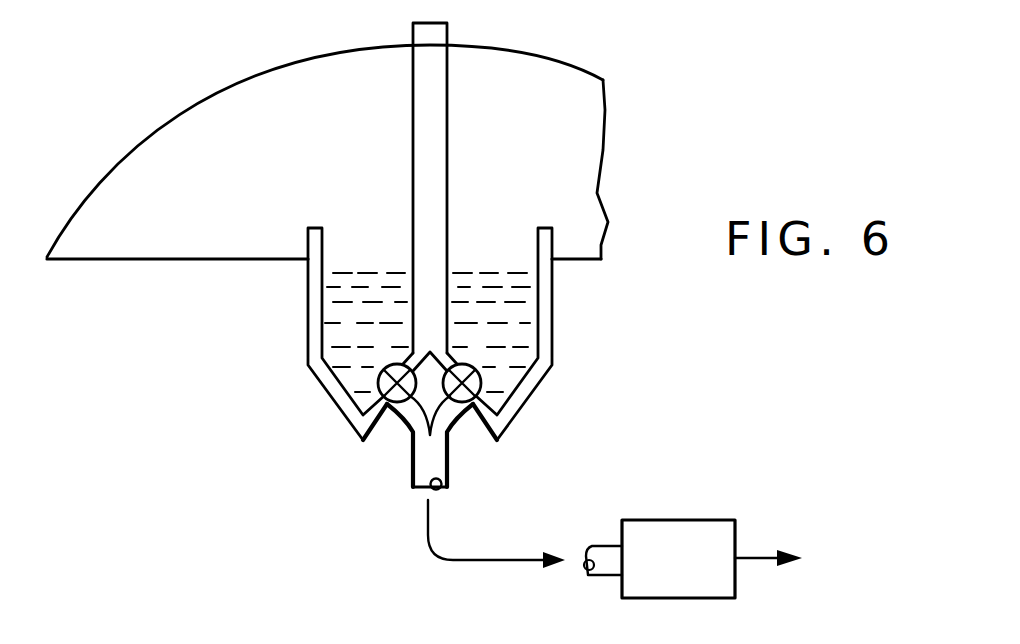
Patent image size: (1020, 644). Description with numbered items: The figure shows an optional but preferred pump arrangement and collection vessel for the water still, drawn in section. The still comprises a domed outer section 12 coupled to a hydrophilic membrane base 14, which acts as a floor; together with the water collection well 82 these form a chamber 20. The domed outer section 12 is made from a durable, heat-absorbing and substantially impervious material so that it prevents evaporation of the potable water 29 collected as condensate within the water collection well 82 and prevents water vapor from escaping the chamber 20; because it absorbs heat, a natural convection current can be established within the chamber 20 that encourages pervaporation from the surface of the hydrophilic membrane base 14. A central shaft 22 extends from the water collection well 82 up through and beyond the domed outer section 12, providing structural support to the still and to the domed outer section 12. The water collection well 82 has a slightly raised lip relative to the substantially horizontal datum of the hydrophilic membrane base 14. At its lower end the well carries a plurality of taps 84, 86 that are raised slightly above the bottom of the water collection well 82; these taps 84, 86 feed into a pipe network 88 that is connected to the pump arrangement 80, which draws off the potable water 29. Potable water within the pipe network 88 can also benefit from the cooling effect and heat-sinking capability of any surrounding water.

The domed outer section 12 is at (230, 90).
The hydrophilic membrane base 14 is at (185, 262).
The chamber 20 is at (297, 178).
The central shaft 22 is at (450, 32).
The potable water 29 is at (518, 320).
The pump arrangement 80 is at (685, 520).
The water collection well 82 is at (555, 348).
The tap 84 is at (378, 382).
The tap 86 is at (481, 377).
The pipe network 88 is at (412, 467).